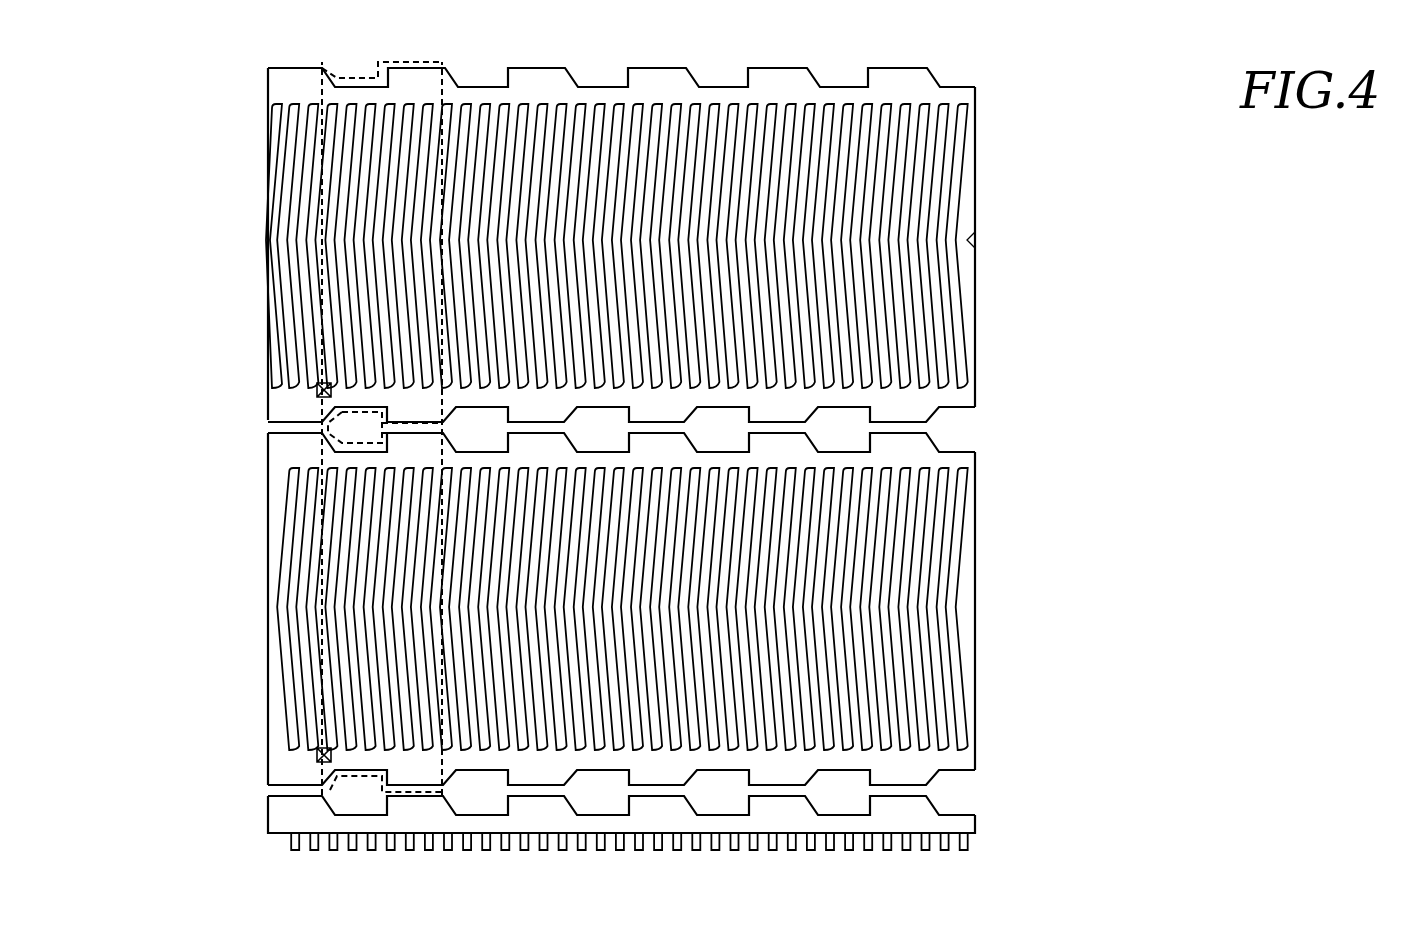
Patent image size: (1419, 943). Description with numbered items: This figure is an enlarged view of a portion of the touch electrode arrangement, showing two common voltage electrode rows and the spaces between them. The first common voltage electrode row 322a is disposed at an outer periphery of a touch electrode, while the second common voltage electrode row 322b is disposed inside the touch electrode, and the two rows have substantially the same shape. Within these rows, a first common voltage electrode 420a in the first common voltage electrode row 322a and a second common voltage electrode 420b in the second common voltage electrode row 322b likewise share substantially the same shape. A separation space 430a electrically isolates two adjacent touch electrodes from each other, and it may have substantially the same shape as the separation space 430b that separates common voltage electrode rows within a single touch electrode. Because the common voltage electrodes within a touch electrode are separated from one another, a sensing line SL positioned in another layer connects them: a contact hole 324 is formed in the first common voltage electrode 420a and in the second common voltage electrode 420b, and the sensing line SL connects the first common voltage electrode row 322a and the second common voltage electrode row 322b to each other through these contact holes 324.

The first common voltage electrode row 322a is at (268, 468).
The second common voltage electrode row 322b is at (268, 98).
The contact hole 324 is at (317, 388).
The first common voltage electrode 420a is at (322, 452).
The second common voltage electrode 420b is at (442, 62).
The separation space 430a is at (963, 793).
The separation space 430b is at (963, 428).
The sensing line SL is at (310, 246).